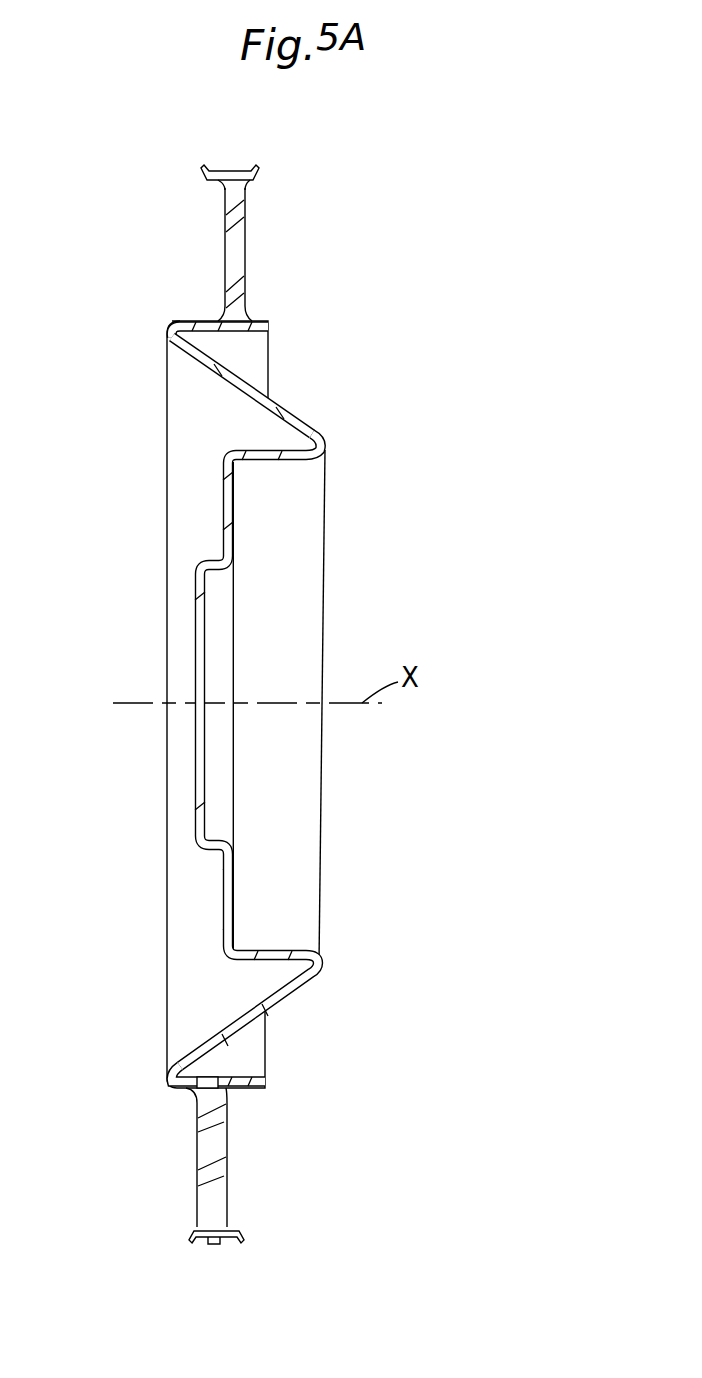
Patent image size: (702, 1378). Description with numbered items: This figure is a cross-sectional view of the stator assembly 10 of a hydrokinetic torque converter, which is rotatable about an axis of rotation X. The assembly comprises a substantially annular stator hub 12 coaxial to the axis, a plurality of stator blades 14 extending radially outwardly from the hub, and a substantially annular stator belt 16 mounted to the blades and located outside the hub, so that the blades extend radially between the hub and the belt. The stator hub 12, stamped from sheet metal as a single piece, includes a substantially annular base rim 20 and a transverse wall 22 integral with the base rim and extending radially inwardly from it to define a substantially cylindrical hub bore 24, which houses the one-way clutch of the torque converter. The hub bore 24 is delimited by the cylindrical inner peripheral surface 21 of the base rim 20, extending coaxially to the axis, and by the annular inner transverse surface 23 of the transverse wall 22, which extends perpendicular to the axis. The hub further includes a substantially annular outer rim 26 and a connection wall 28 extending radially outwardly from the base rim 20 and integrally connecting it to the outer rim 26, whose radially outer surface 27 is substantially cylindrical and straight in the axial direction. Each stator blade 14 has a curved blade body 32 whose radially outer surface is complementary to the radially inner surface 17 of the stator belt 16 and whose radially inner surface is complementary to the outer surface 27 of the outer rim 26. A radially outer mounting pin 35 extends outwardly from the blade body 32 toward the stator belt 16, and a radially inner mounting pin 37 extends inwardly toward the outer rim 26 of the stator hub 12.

The stator assembly 10 is at (481, 338).
The stator hub 12 is at (163, 914).
The stator blades 14 is at (219, 252).
The stator belt 16 is at (209, 176).
The radially inner surface of the stator belt 17 is at (233, 1232).
The base rim 20 is at (296, 461).
The cylindrical inner peripheral surface 21 is at (273, 950).
The transverse wall 22 is at (222, 520).
The inner transverse surface 23 is at (233, 903).
The hub bore 24 is at (293, 609).
The outer rim 26 is at (262, 320).
The radially outer surface of the outer rim 27 is at (207, 320).
The connection wall 28 is at (272, 400).
The blade body 32 is at (238, 252).
The radially outer mounting pin 35 is at (215, 1245).
The radially inner mounting pin 37 is at (207, 1075).